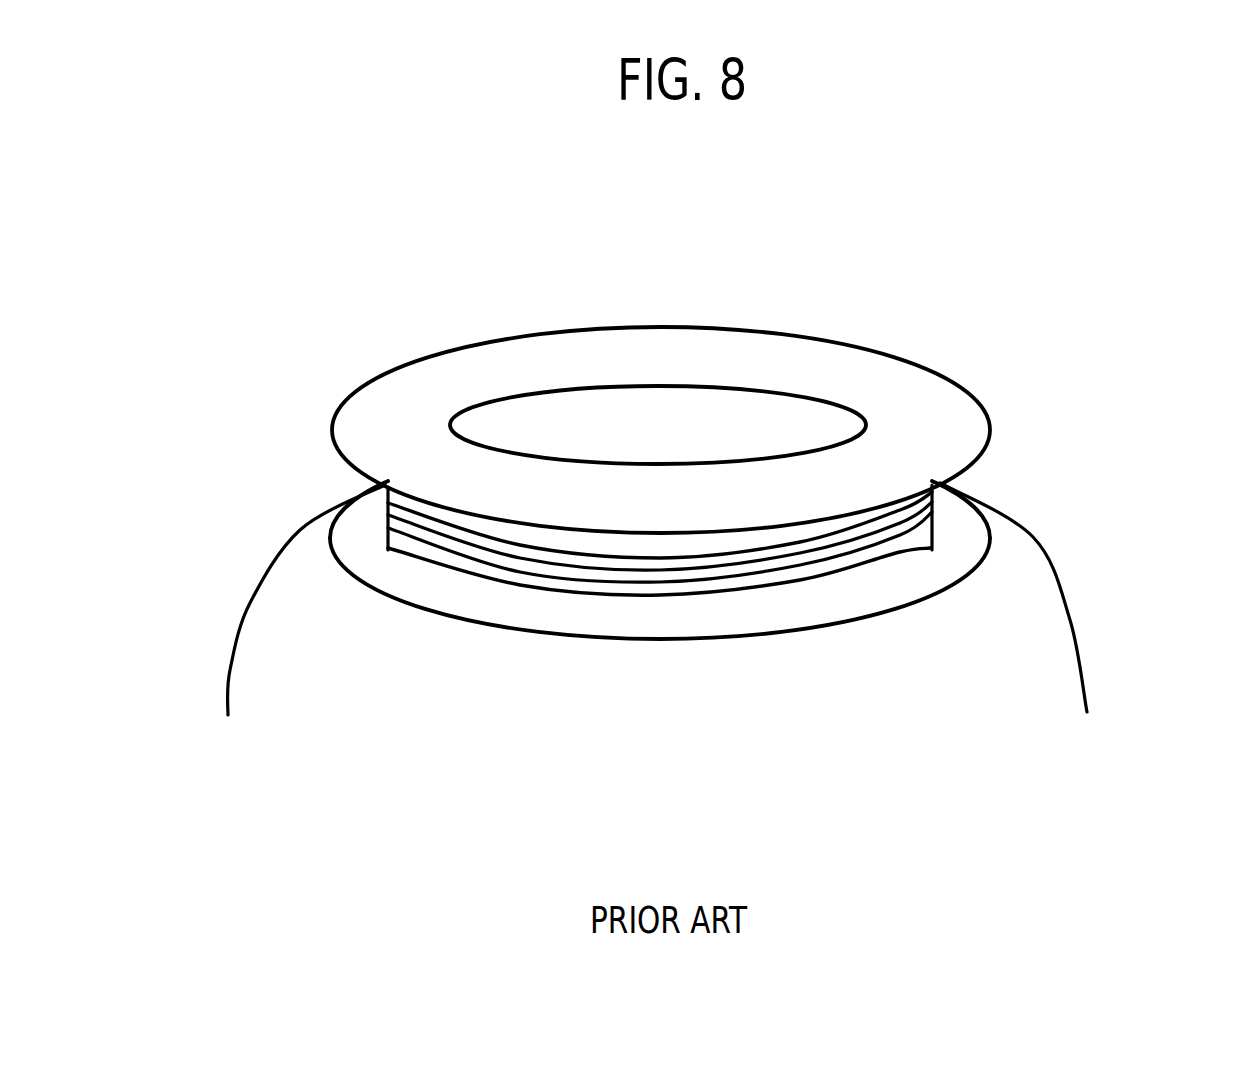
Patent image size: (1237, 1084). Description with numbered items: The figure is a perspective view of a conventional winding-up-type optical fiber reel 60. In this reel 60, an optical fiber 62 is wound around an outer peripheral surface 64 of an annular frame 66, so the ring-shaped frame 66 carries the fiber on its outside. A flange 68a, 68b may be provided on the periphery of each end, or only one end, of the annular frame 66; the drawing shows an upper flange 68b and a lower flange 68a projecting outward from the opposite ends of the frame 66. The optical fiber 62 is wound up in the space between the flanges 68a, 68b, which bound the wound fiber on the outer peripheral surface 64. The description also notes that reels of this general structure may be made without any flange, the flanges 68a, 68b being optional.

The optical fiber reel 60 is at (996, 282).
The optical fiber 62 is at (1033, 530).
The outer peripheral surface 64 is at (492, 548).
The annular frame 66 is at (650, 542).
The flange 68a is at (908, 607).
The flange 68b is at (332, 433).